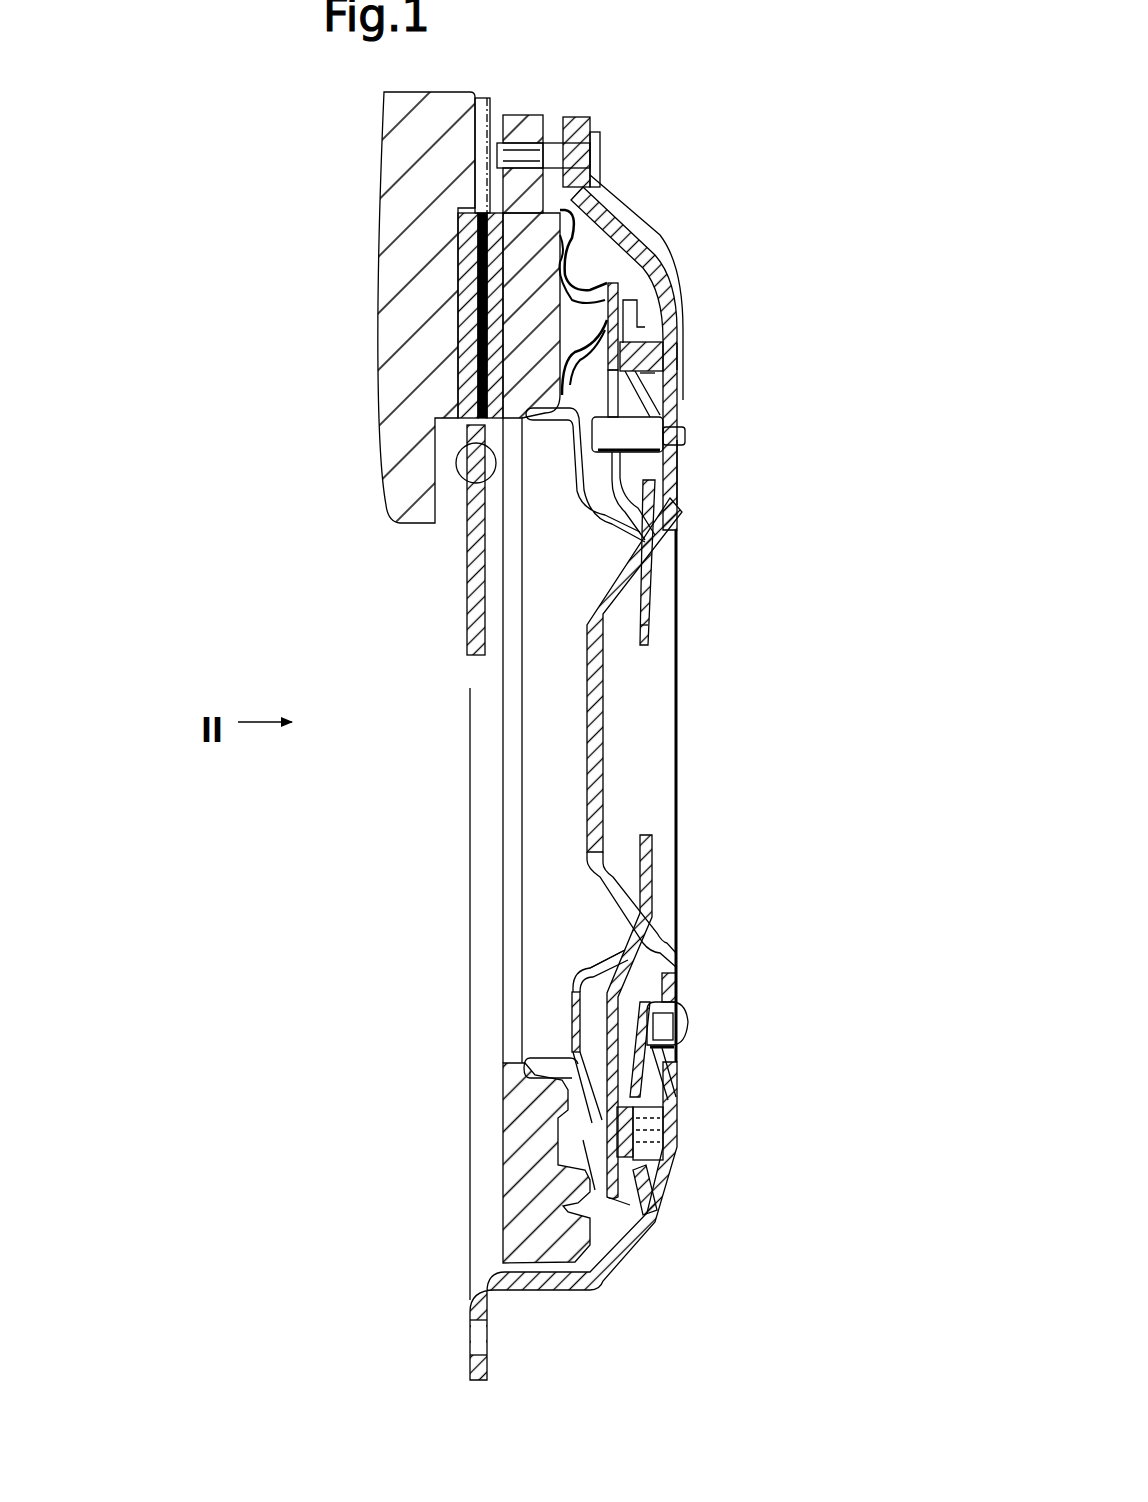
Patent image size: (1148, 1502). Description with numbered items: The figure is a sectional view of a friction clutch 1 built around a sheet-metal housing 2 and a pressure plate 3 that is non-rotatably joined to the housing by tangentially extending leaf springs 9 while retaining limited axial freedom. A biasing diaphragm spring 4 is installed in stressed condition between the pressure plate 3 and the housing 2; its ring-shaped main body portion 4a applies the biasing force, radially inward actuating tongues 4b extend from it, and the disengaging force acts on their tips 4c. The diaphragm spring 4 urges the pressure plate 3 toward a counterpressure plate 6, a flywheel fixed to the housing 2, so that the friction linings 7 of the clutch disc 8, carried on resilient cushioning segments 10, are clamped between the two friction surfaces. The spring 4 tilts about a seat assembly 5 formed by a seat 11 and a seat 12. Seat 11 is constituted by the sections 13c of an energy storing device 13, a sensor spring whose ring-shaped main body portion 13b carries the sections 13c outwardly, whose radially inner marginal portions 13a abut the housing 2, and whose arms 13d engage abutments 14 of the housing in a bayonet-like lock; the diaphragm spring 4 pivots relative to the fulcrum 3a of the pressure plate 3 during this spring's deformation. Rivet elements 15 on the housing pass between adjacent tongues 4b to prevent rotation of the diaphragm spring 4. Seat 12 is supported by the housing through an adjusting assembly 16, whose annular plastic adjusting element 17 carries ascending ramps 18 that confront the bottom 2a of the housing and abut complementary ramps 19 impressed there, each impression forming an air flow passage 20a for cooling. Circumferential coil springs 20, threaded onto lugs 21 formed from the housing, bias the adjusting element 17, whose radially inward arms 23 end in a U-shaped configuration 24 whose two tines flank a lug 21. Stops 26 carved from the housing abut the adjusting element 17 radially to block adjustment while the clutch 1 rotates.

The friction clutch 1 is at (678, 157).
The housing 2 is at (600, 195).
The bottom of the housing 2a is at (672, 465).
The pressure plate 3 is at (510, 1237).
The fulcrum 3a is at (590, 1245).
The diaphragm spring 4 is at (650, 1170).
The ring-shaped main body portion 4a is at (625, 1195).
The actuating tongues 4b is at (648, 592).
The tips 4c is at (648, 628).
The seat assembly 5 is at (588, 1130).
The counterpressure plate 6 is at (405, 212).
The friction linings 7 is at (487, 98).
The clutch disc 8 is at (470, 613).
The leaf springs 9 is at (548, 125).
The resilient cushioning segments 10 is at (465, 300).
The seat 11 is at (635, 300).
The seat 12 is at (625, 338).
The energy storing device 13 is at (574, 1007).
The radially inner marginal portions 13a is at (652, 915).
The ring-shaped main body portion 13b is at (572, 1030).
The sections 13c is at (592, 1097).
The arms 13d is at (585, 965).
The abutments 14 is at (643, 560).
The rivet elements 15 is at (605, 445).
The adjusting assembly 16 is at (680, 357).
The adjusting element 17 is at (688, 432).
The ascending ramps 18 is at (652, 350).
The complementary ramps 19 is at (655, 375).
The coil springs 20 is at (680, 1022).
The air flow passage 20a is at (650, 385).
The lugs 21 is at (678, 1040).
The arms 23 is at (670, 998).
The U-shaped configuration 24 is at (660, 1055).
The stops 26 is at (625, 1145).